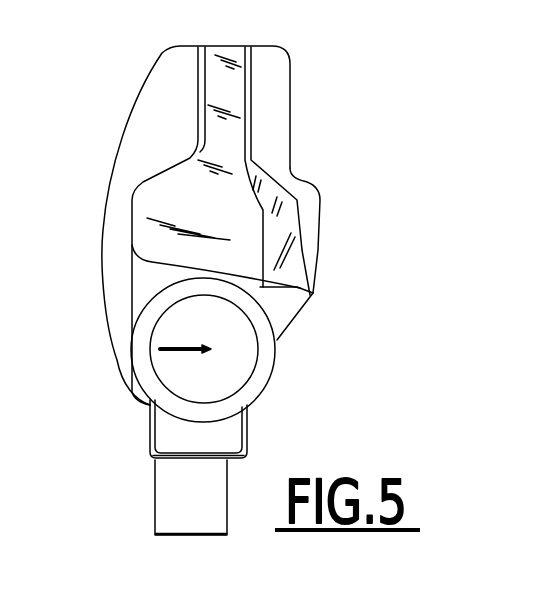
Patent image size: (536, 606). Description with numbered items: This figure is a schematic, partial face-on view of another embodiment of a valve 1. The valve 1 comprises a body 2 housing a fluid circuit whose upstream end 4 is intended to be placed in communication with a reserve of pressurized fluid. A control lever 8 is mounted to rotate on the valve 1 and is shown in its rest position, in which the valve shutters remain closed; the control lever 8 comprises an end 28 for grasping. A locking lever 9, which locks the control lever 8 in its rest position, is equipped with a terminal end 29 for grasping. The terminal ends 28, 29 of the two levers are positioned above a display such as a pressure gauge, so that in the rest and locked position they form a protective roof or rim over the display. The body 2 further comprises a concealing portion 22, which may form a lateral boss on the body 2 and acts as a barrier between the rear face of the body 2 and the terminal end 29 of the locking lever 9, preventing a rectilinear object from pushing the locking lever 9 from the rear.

The valve 1 is at (403, 305).
The body 2 is at (287, 313).
The upstream end 4 is at (200, 540).
The control lever 8 is at (155, 226).
The end for grasping 28 is at (158, 255).
The locking lever 9 is at (297, 183).
The concealing portion 22 is at (323, 223).
The end for grasping 29 is at (312, 298).